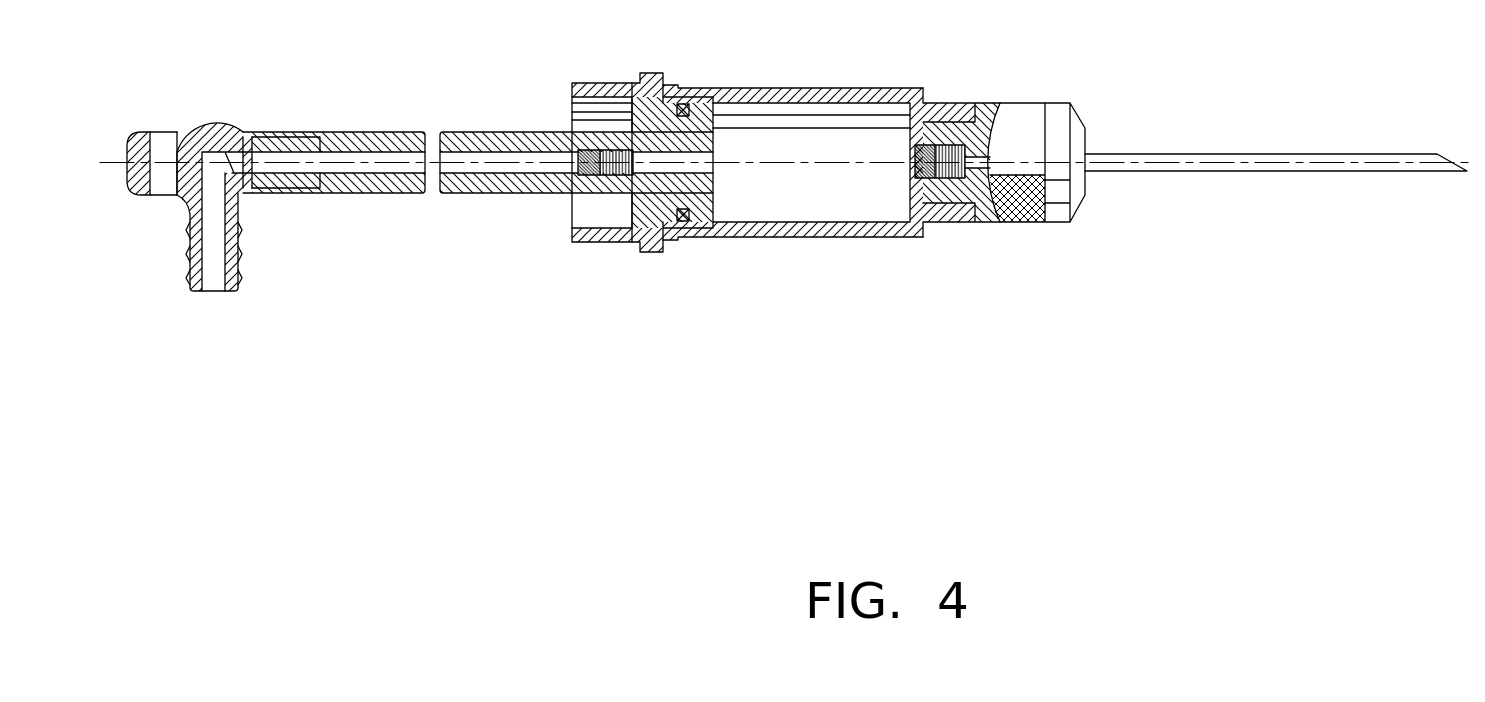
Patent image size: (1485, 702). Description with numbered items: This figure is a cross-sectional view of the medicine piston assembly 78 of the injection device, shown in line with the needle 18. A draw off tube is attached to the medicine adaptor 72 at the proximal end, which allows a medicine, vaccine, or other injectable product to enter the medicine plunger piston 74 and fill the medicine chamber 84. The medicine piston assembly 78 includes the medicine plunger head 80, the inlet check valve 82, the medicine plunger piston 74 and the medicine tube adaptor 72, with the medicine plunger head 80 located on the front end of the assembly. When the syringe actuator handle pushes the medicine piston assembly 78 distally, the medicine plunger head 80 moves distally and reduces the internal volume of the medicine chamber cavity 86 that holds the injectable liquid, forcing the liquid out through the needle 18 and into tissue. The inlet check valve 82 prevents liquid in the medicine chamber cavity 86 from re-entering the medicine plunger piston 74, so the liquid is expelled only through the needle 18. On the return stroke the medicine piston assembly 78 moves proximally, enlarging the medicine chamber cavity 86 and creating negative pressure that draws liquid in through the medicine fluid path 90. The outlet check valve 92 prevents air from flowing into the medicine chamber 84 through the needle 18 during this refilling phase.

The needle 18 is at (1310, 166).
The medicine adaptor 72 is at (172, 196).
The medicine plunger piston 74 is at (368, 132).
The medicine piston assembly 78 is at (356, 193).
The medicine plunger head 80 is at (695, 108).
The inlet check valve 82 is at (601, 150).
The medicine chamber 84 is at (801, 237).
The medicine chamber cavity 86 is at (812, 155).
The medicine fluid path 90 is at (510, 152).
The outlet check valve 92 is at (952, 178).